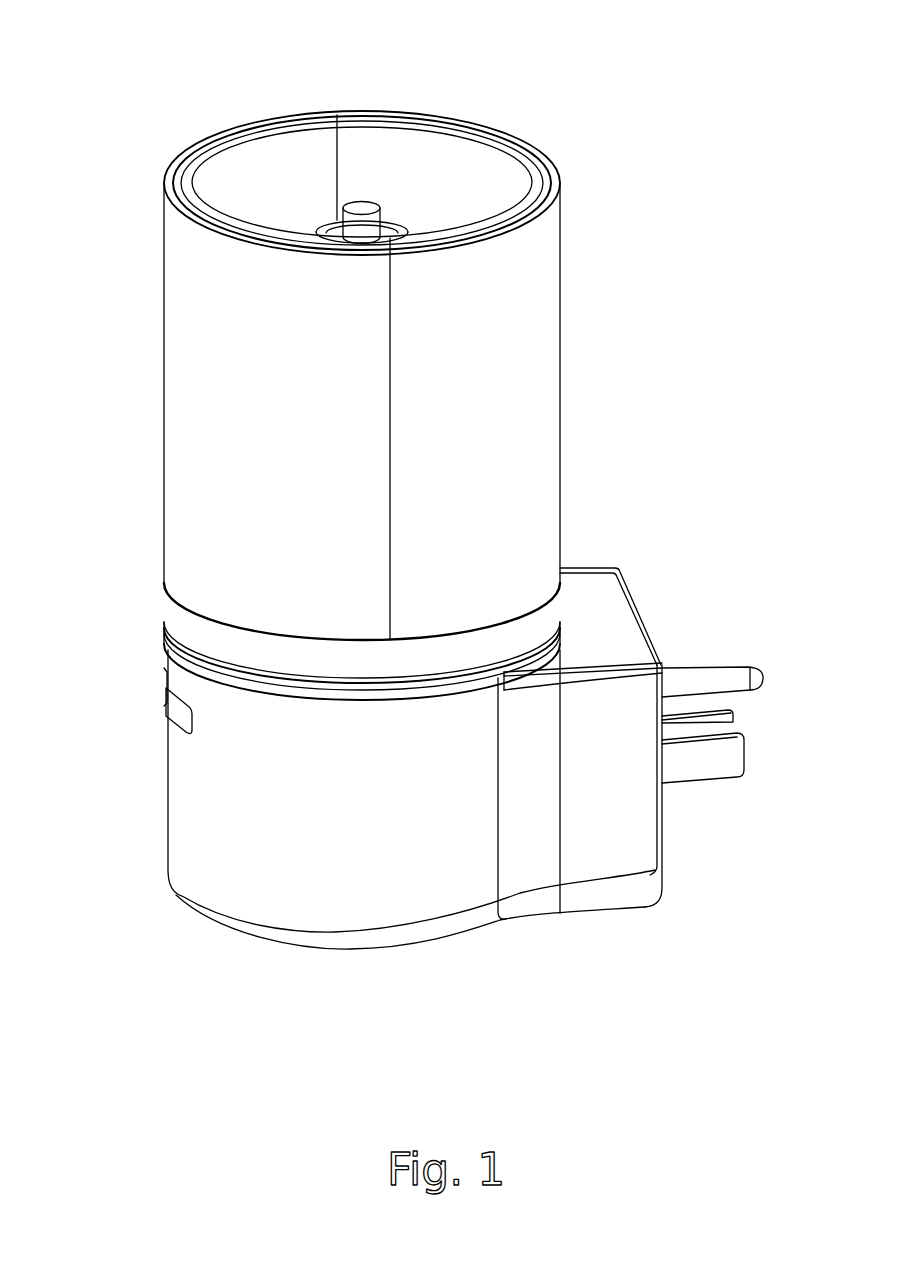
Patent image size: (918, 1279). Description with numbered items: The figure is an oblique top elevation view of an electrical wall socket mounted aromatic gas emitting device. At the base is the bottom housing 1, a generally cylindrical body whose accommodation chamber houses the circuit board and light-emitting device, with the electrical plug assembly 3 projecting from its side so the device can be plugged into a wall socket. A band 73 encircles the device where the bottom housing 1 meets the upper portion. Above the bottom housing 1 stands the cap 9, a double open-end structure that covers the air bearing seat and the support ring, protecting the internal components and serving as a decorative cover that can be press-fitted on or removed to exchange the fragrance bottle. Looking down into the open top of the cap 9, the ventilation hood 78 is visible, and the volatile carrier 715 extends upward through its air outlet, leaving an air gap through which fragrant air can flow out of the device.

The bottom housing 1 is at (217, 843).
The electrical plug assembly 3 is at (696, 681).
The cap 9 is at (533, 344).
The ring 73 is at (164, 643).
The ventilation hood 78 is at (392, 235).
The volatile carrier 715 is at (360, 214).